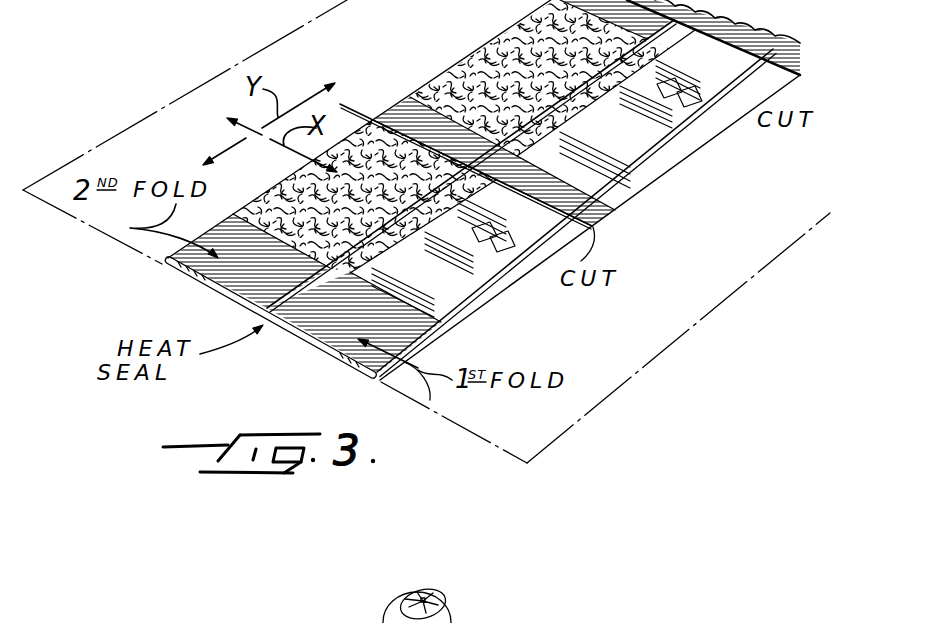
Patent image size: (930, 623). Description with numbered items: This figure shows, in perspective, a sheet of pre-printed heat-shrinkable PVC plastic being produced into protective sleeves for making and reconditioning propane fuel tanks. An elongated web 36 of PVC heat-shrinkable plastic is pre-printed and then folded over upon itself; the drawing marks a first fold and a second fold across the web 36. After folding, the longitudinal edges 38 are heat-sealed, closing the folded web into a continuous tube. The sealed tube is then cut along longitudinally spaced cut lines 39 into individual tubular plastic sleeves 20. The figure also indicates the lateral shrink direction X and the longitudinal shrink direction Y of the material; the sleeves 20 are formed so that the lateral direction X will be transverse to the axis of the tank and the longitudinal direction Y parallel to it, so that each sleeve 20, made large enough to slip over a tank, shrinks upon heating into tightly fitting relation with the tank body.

The plastic sleeve 20 is at (698, 162).
The elongated web 36 is at (462, 46).
The longitudinal edges 38 is at (266, 308).
The cut lines 39 is at (797, 82).